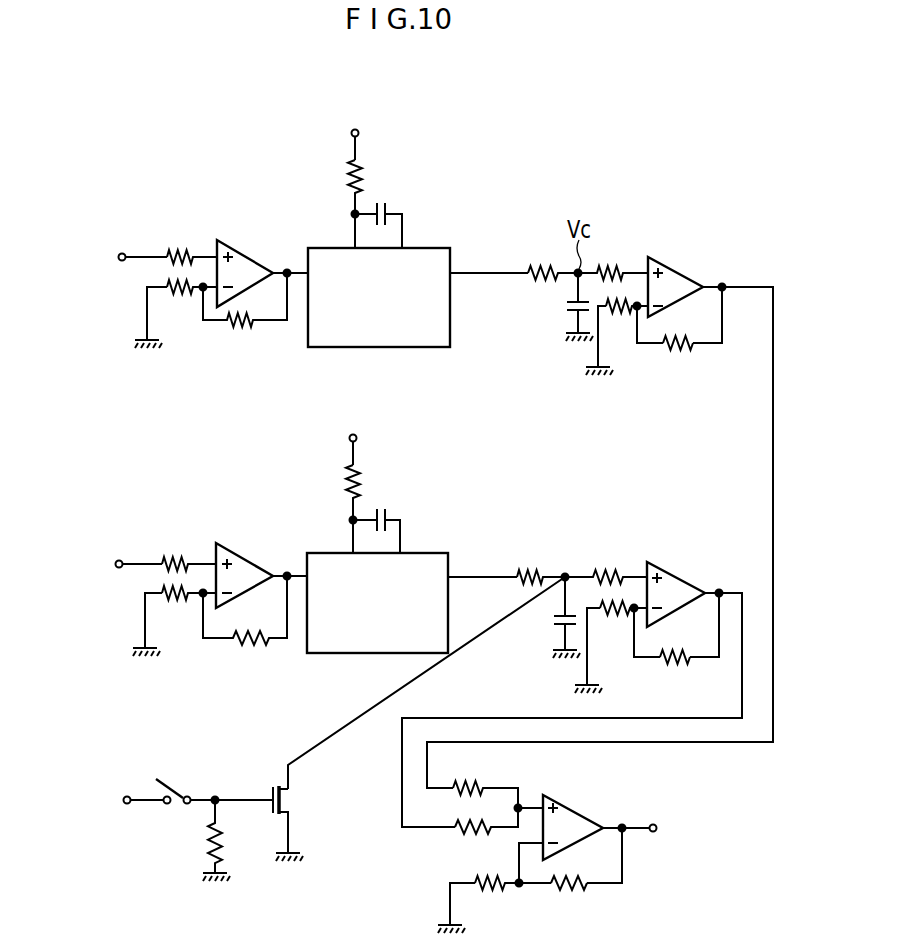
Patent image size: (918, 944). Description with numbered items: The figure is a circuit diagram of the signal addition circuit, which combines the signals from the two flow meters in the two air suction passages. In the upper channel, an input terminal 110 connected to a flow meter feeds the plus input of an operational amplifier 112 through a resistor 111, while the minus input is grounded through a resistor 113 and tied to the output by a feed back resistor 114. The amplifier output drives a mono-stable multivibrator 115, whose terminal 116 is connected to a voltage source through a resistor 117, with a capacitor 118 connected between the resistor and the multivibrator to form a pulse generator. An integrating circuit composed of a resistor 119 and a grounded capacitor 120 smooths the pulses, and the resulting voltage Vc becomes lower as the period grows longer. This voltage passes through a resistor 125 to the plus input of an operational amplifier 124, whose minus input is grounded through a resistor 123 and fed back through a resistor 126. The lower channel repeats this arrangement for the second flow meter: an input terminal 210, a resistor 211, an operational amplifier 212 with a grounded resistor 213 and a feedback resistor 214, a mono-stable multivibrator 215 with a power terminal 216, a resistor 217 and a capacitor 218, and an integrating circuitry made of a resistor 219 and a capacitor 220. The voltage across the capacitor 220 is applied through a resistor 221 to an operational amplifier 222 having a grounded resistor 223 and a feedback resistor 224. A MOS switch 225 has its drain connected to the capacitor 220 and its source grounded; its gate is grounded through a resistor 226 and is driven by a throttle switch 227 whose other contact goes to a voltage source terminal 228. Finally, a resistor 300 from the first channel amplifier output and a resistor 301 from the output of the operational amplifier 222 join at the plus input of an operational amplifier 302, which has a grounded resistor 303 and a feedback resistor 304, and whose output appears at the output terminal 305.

The input terminal 110 is at (116, 258).
The resistor 111 is at (178, 248).
The operational amplifier 112 is at (249, 255).
The resistor 113 is at (179, 294).
The feed back resistor 114 is at (241, 329).
The mono-stable multivibrator 115 is at (379, 348).
The terminal 116 is at (350, 133).
The resistor 117 is at (348, 178).
The capacitor 118 is at (382, 203).
The resistor 119 is at (535, 261).
The capacitor 120 is at (568, 307).
The resistor 123 is at (619, 313).
The operational amplifier 124 is at (680, 272).
The resistor 125 is at (615, 261).
The resistor 126 is at (678, 353).
The input terminal 210 is at (113, 565).
The resistor 211 is at (175, 553).
The operational amplifier 212 is at (252, 558).
The resistor 213 is at (174, 602).
The resistor 214 is at (248, 647).
The mono-stable multivibrator 215 is at (378, 653).
The terminal 216 is at (349, 440).
The resistor 217 is at (347, 486).
The capacitor 218 is at (379, 511).
The resistor 219 is at (531, 567).
The capacitor 220 is at (560, 618).
The resistor 221 is at (608, 567).
The operational amplifier 222 is at (683, 582).
The resistor 223 is at (617, 610).
The resistor 224 is at (675, 667).
The MOS switch 225 is at (290, 798).
The resistor 226 is at (222, 837).
The throttle switch 227 is at (178, 809).
The voltage source terminal 228 is at (121, 800).
The resistor 300 is at (472, 781).
The resistor 301 is at (477, 835).
The operational amplifier 302 is at (596, 805).
The resistor 303 is at (490, 893).
The resistor 304 is at (572, 893).
The output terminal 305 is at (657, 828).